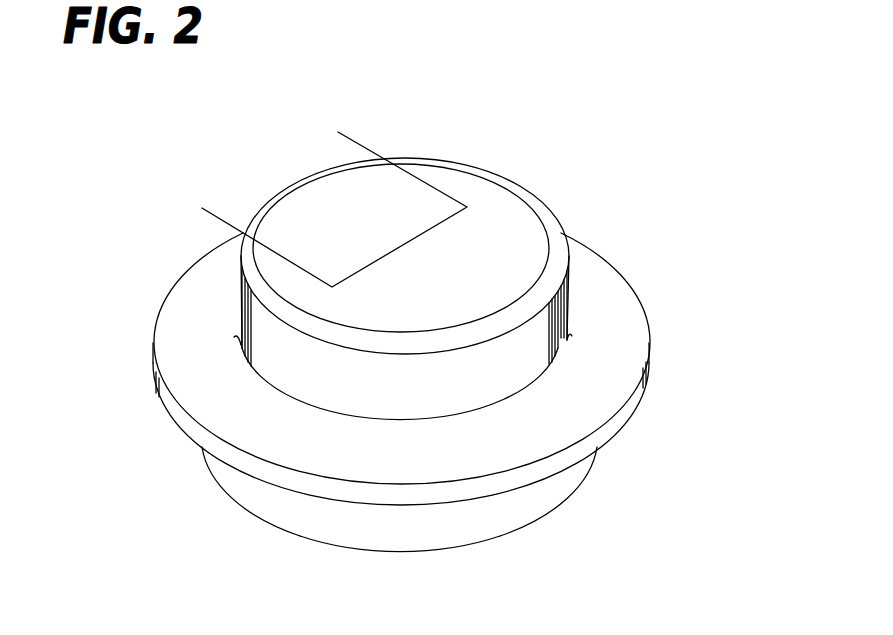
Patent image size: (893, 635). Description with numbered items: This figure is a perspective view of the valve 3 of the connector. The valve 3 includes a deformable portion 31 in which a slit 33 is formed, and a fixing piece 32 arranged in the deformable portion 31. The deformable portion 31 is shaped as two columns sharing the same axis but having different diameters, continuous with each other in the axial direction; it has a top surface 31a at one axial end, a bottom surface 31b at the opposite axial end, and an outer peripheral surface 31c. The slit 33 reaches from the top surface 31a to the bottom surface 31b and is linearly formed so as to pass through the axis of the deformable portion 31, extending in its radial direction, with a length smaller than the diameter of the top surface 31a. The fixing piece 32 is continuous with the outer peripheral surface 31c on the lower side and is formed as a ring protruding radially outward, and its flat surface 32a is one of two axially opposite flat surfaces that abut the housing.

The valve 3 is at (650, 150).
The deformable portion 31 is at (533, 194).
The top surface 31a is at (490, 197).
The bottom surface 31b is at (427, 550).
The outer peripheral surface 31c is at (552, 500).
The fixing piece 32 is at (157, 372).
The flat surface 32a is at (627, 313).
The slit 33 is at (372, 235).